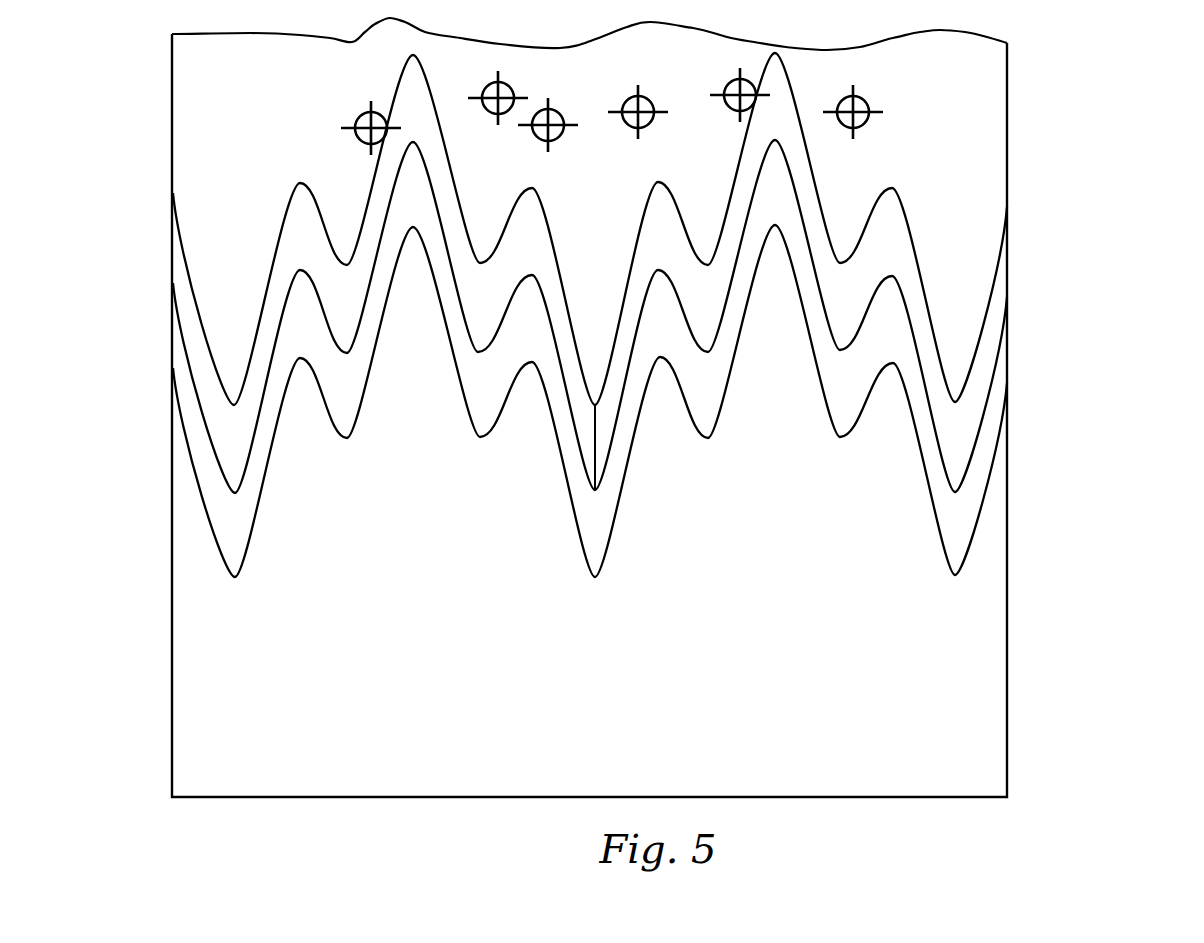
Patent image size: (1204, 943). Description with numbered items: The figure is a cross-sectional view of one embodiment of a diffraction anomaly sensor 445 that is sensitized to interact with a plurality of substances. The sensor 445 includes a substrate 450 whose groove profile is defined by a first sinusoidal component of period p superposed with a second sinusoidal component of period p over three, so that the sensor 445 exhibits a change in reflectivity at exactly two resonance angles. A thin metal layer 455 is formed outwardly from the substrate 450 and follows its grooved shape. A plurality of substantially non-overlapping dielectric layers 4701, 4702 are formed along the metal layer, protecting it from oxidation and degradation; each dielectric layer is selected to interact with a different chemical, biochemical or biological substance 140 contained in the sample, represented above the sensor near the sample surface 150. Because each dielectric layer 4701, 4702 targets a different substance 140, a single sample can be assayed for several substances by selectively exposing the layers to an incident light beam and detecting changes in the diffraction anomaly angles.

The substance 140 is at (863, 96).
The surface 150 is at (985, 80).
The sensor 445 is at (1098, 186).
The dielectric layer 4701 is at (321, 265).
The dielectric layer 4702 is at (680, 266).
The thin metal layer 455 is at (613, 518).
The substrate 450 is at (613, 668).